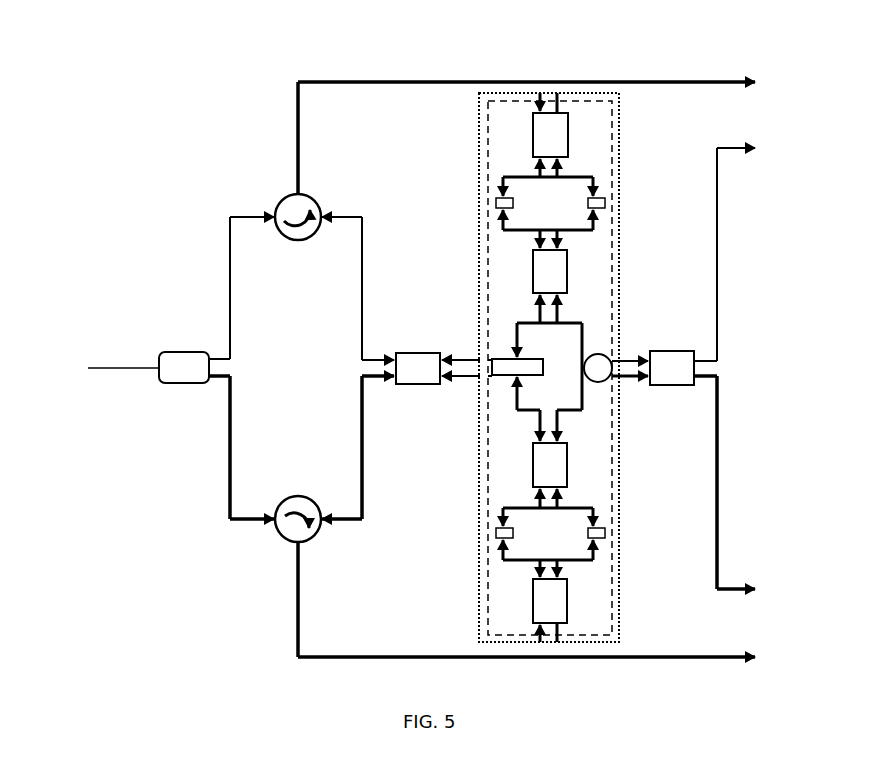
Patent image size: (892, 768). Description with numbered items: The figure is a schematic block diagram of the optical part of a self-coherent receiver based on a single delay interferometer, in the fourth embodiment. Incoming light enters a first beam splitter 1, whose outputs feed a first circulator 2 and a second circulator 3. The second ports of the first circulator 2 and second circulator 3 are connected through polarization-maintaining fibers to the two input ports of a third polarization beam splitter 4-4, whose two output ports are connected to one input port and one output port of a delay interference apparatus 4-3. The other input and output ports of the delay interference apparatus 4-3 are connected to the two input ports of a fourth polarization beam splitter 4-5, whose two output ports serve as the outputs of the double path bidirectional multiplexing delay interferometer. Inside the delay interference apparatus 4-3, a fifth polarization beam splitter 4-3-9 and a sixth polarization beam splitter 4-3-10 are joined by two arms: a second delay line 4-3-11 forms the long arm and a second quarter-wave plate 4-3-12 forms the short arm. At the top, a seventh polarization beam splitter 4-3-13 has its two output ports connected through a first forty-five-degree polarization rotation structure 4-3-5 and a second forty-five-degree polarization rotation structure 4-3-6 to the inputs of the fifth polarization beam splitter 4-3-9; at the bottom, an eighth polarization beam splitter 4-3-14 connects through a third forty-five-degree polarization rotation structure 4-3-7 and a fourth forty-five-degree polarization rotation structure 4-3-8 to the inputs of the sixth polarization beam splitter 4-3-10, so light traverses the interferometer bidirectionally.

The first beam splitter 1 is at (187, 385).
The first circulator 2 is at (283, 197).
The second circulator 3 is at (282, 540).
The delay interference apparatus 4-3 is at (612, 95).
The third polarization beam splitter 4-4 is at (415, 385).
The fourth polarization beam splitter 4-5 is at (670, 352).
The first 45° polarization rotation structure 4-3-5 is at (496, 200).
The second 45° polarization rotation structure 4-3-6 is at (605, 200).
The third 45° polarization rotation structure 4-3-7 is at (496, 535).
The fourth 45° polarization rotation structure 4-3-8 is at (730, 630).
The fifth polarization beam splitter 4-3-9 is at (533, 270).
The sixth polarization beam splitter 4-3-10 is at (710, 505).
The second delay line 4-3-11 is at (600, 355).
The second quarter-wave plate 4-3-12 is at (510, 377).
The seventh polarization beam splitter 4-3-13 is at (533, 130).
The eighth polarization beam splitter 4-3-14 is at (533, 600).